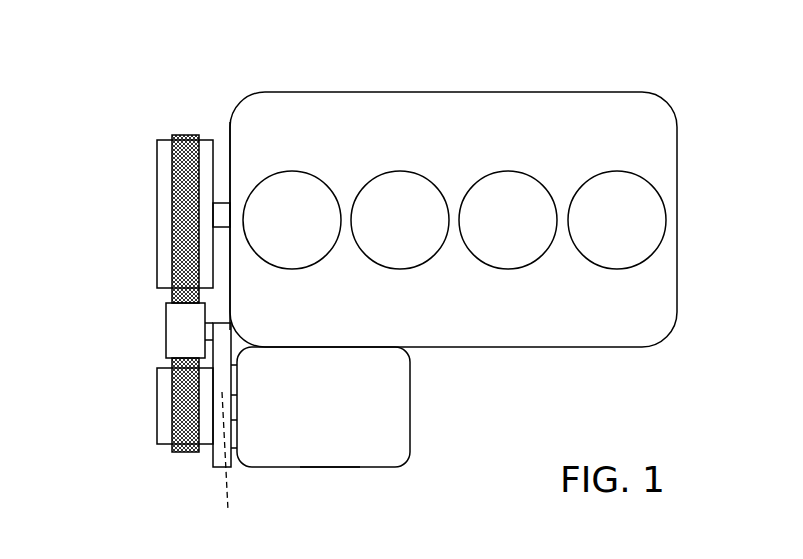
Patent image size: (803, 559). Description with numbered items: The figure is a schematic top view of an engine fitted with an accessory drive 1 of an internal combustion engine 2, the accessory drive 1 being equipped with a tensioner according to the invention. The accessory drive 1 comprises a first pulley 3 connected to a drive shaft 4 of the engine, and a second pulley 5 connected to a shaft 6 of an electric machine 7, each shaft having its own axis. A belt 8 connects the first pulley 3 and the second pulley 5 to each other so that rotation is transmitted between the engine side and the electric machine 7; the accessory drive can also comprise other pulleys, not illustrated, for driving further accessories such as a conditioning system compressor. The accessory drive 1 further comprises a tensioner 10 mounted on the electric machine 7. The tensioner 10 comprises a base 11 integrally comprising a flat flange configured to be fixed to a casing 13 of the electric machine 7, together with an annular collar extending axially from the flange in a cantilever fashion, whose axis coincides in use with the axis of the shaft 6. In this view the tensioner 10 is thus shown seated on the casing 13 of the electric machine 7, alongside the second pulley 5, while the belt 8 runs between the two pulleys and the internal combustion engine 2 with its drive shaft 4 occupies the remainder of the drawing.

The accessory drive 1 is at (145, 118).
The internal combustion engine 2 is at (452, 100).
The first pulley 3 is at (158, 200).
The drive shaft 4 is at (222, 210).
The second pulley 5 is at (163, 408).
The shaft 6 is at (223, 466).
The electric machine 7 is at (332, 482).
The belt 8 is at (175, 268).
The tensioner 10 is at (203, 476).
The base 11 is at (236, 437).
The casing 13 is at (398, 424).